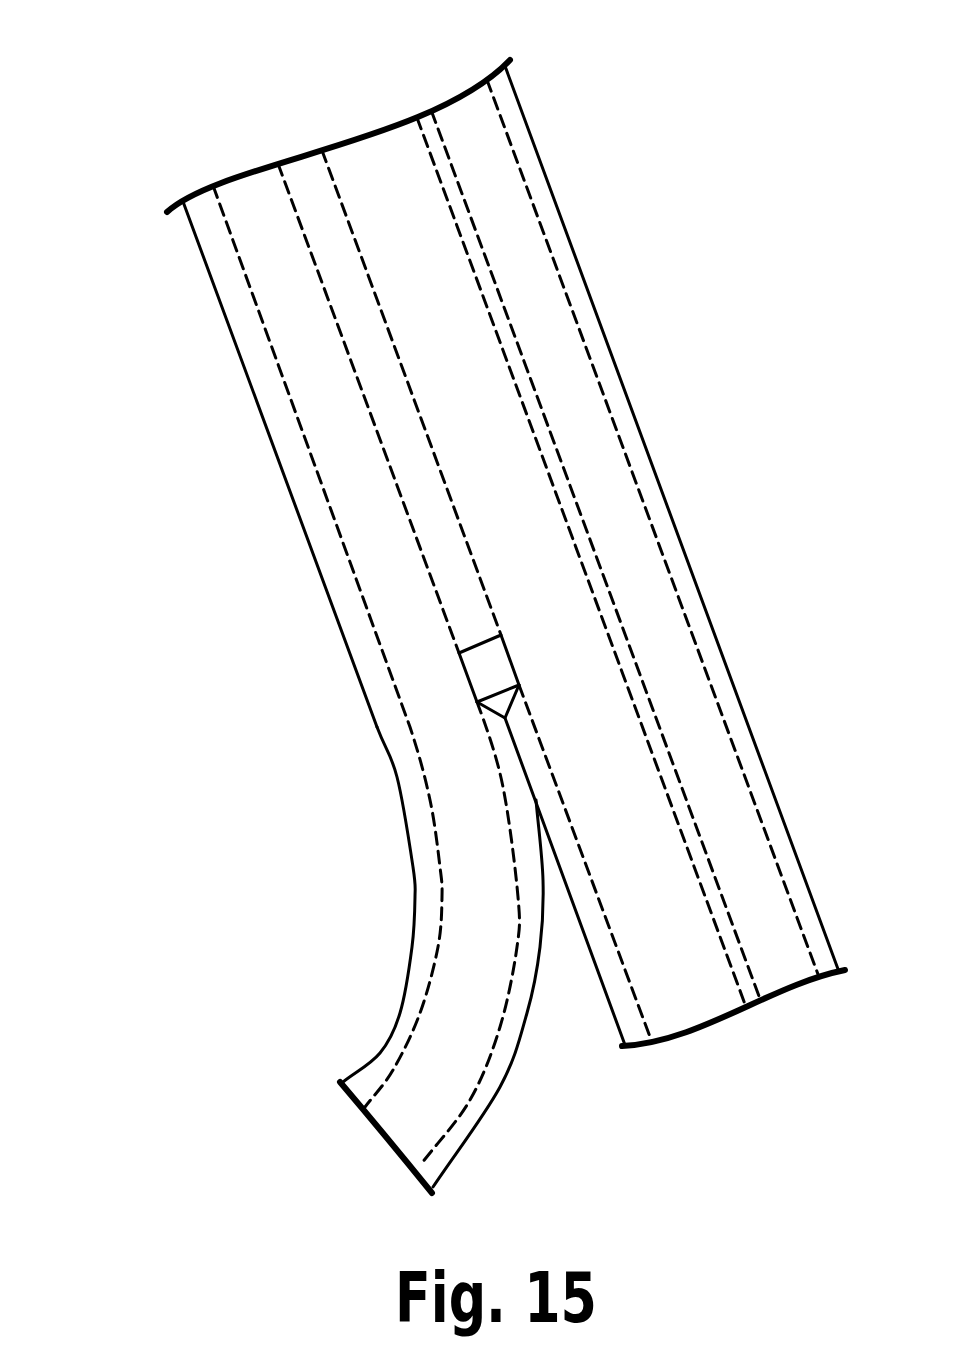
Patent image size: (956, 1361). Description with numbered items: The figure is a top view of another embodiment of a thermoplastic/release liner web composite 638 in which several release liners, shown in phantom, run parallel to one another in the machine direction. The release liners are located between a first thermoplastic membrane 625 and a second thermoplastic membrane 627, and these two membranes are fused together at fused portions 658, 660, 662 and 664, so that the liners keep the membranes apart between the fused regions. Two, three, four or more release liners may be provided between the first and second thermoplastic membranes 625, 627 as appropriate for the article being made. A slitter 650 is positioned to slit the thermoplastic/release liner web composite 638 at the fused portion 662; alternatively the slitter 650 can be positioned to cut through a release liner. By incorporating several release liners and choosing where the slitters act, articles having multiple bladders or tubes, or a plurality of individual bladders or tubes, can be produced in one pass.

The fused portion 658 is at (222, 248).
The first thermoplastic membrane 625 is at (333, 540).
The second thermoplastic membrane 627 is at (330, 416).
The fused portion 662 is at (312, 180).
The thermoplastic/release liner web composite 638 is at (393, 185).
The fused portion 664 is at (427, 125).
The fused portion 660 is at (535, 200).
The slitter 650 is at (488, 670).